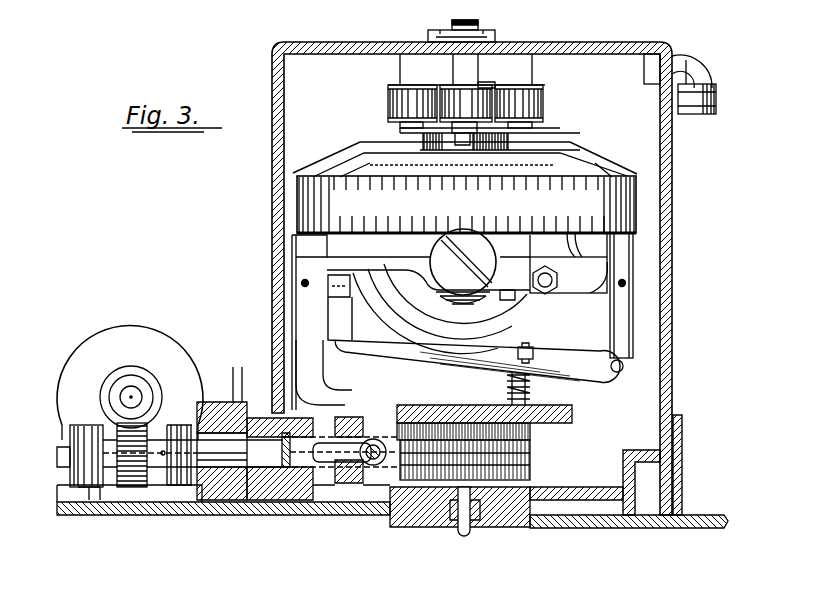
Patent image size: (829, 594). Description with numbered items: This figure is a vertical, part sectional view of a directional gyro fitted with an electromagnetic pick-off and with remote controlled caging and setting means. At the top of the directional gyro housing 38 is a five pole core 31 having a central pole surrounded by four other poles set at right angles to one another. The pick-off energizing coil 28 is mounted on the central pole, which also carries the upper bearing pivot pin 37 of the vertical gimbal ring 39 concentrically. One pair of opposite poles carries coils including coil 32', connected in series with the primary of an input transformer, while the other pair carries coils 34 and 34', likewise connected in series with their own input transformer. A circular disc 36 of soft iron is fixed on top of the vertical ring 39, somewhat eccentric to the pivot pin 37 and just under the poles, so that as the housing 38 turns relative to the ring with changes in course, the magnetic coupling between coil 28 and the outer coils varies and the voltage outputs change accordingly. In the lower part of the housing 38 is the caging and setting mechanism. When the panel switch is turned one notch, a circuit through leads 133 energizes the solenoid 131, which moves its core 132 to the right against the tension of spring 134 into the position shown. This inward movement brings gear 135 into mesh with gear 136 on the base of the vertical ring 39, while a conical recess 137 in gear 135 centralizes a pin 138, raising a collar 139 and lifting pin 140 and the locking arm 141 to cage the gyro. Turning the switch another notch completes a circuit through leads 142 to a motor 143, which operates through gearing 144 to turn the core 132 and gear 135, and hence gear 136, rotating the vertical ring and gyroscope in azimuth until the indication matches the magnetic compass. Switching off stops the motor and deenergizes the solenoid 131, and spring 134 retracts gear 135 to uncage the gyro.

The pick-off energizing coil 28 is at (492, 87).
The five pole core 31 is at (400, 70).
The coil 32' is at (452, 95).
The coil 34 is at (394, 106).
The coil 34' is at (543, 106).
The circular disc 36 is at (405, 133).
The upper bearing pivot pin 37 is at (520, 143).
The directional gyro housing 38 is at (272, 72).
The vertical gimbal ring 39 is at (300, 175).
The solenoid 131 is at (212, 408).
The core 132 is at (218, 505).
The leads 133 is at (234, 368).
The spring 134 is at (180, 487).
The gear 135 is at (347, 487).
The gear 136 is at (567, 427).
The conical recess 137 is at (366, 466).
The pin 138 is at (353, 440).
The collar 139 is at (533, 468).
The pin 140 is at (533, 350).
The locking arm 141 is at (343, 338).
The leads 142 is at (60, 385).
The motor 143 is at (130, 330).
The gearing 144 is at (137, 380).